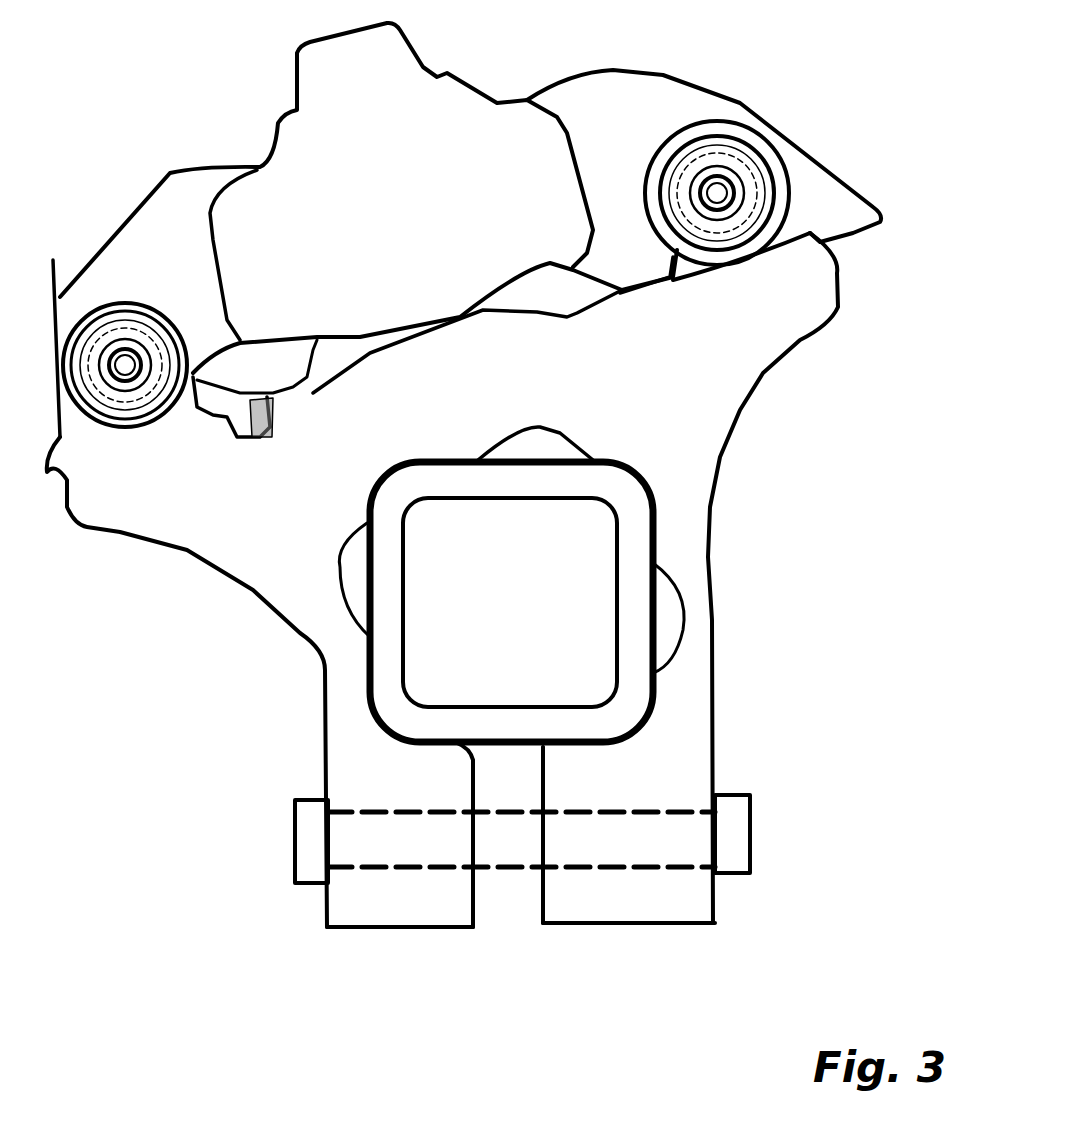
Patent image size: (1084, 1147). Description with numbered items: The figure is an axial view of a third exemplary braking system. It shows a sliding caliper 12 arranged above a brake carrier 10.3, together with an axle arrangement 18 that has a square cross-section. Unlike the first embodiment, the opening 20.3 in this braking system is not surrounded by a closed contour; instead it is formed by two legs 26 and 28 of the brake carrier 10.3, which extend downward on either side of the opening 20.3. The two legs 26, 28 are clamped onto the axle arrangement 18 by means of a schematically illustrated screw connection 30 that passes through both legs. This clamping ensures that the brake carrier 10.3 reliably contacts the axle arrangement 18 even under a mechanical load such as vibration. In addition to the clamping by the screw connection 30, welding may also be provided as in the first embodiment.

The sliding caliper 12 is at (690, 87).
The brake carrier 10.3 is at (742, 408).
The axle arrangement 18 is at (657, 623).
The screw connection 30 is at (753, 827).
The leg 26 is at (407, 930).
The leg 28 is at (657, 923).
The opening 20.3 is at (508, 775).